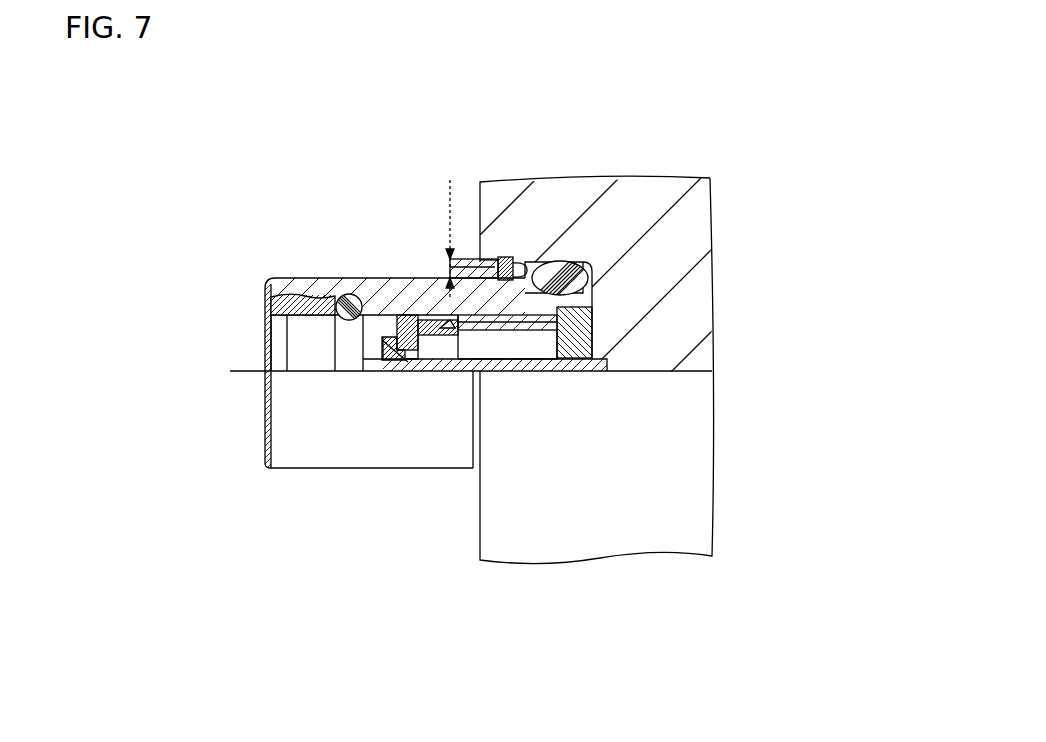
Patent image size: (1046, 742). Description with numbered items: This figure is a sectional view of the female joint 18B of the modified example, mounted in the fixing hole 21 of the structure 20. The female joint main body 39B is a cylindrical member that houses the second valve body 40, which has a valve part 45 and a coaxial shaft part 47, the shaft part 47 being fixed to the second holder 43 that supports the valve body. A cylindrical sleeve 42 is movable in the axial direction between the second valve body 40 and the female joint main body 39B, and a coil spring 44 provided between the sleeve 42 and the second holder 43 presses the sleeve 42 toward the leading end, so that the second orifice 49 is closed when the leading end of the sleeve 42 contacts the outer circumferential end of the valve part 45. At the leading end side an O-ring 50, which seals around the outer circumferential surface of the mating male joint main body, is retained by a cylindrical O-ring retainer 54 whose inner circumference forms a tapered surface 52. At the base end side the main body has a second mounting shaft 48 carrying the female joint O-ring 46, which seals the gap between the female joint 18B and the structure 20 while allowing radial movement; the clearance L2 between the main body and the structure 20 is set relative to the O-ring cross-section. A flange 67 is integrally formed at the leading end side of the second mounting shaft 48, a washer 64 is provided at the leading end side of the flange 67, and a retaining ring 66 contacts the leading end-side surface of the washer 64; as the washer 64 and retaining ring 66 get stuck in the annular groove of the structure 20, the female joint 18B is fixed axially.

The female joint 18B is at (288, 173).
The structure 20 is at (620, 527).
The fixing hole 21 is at (560, 258).
The female joint main body 39B is at (383, 278).
The second valve body 40 is at (408, 382).
The sleeve 42 is at (415, 303).
The second holder 43 is at (593, 337).
The coil spring 44 is at (537, 322).
The valve part 45 is at (373, 372).
The female joint O-ring 46 is at (583, 262).
The shaft part 47 is at (497, 372).
The second mounting shaft 48 is at (535, 264).
The second orifice 49 is at (307, 341).
The O-ring 50 is at (348, 293).
The tapered surface 52 is at (283, 313).
The O-ring retainer 54 is at (290, 293).
The washer 64 is at (488, 259).
The retaining ring 66 is at (507, 257).
The flange 67 is at (517, 268).
The clearance L2 is at (437, 240).